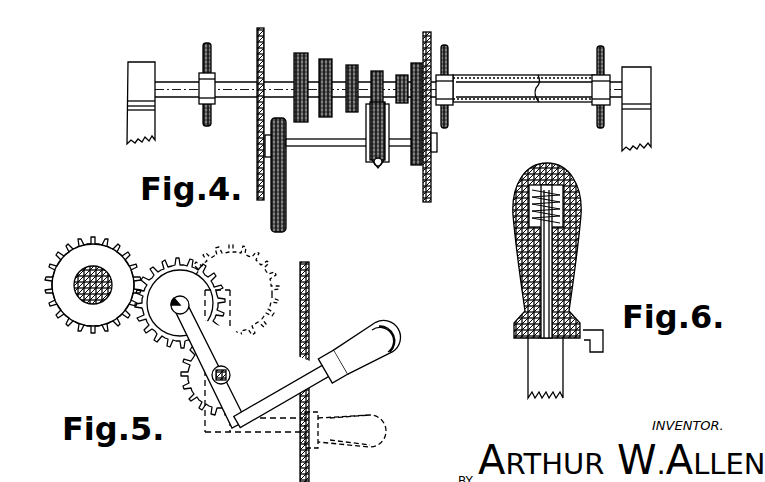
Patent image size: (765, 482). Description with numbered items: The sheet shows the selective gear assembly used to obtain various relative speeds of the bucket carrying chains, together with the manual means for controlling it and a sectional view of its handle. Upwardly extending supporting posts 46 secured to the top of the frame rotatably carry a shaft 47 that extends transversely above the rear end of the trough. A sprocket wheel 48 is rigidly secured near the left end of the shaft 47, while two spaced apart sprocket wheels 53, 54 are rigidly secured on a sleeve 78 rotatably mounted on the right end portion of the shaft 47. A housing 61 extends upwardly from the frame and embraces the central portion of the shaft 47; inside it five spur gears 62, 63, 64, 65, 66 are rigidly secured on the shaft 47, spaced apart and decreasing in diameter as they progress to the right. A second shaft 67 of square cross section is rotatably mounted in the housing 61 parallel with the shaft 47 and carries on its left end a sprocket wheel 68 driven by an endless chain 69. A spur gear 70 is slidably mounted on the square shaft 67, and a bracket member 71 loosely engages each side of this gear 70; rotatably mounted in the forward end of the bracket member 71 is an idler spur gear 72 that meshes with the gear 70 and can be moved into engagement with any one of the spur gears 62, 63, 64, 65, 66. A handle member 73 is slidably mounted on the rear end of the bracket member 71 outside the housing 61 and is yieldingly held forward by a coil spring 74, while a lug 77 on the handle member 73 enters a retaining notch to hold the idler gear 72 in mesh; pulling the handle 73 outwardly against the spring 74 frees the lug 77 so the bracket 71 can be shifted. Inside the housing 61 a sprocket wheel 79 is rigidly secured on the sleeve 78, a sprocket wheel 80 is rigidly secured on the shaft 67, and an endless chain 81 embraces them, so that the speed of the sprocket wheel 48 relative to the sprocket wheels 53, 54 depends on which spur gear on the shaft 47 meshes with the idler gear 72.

In FIG. 4, the supporting posts 46 is at (140, 128).
In FIG. 4, the shaft 47 is at (503, 82).
In FIG. 5, the shaft 47 is at (90, 266).
In FIG. 4, the sprocket wheel 48 is at (210, 64).
In FIG. 4, the sprocket wheel 53 is at (448, 58).
In FIG. 4, the sprocket wheel 54 is at (606, 56).
In FIG. 4, the housing 61 is at (257, 118).
In FIG. 5, the housing 61 is at (309, 293).
In FIG. 4, the spur gear 62 is at (297, 55).
In FIG. 4, the spur gear 63 is at (326, 59).
In FIG. 4, the spur gear 64 is at (353, 66).
In FIG. 4, the spur gear 65 is at (378, 70).
In FIG. 5, the spur gear 65 is at (72, 250).
In FIG. 4, the spur gear 66 is at (403, 74).
In FIG. 4, the shaft 67 is at (323, 142).
In FIG. 4, the sprocket wheel 68 is at (287, 159).
In FIG. 4, the endless chain 69 is at (287, 207).
In FIG. 4, the spur gear 70 is at (374, 165).
In FIG. 5, the spur gear 70 is at (247, 372).
In FIG. 4, the bracket member 71 is at (384, 163).
In FIG. 5, the bracket member 71 is at (226, 426).
In FIG. 6, the bracket member 71 is at (530, 373).
In FIG. 4, the spur gear 72 is at (383, 126).
In FIG. 5, the spur gear 72 is at (168, 287).
In FIG. 5, the handle member 73 is at (363, 348).
In FIG. 6, the handle member 73 is at (531, 272).
In FIG. 6, the coil spring 74 is at (561, 212).
In FIG. 6, the lug 77 is at (594, 335).
In FIG. 4, the sleeve 78 is at (581, 80).
In FIG. 4, the sprocket wheel 79 is at (416, 62).
In FIG. 4, the sprocket wheel 80 is at (413, 163).
In FIG. 4, the endless chain 81 is at (412, 131).